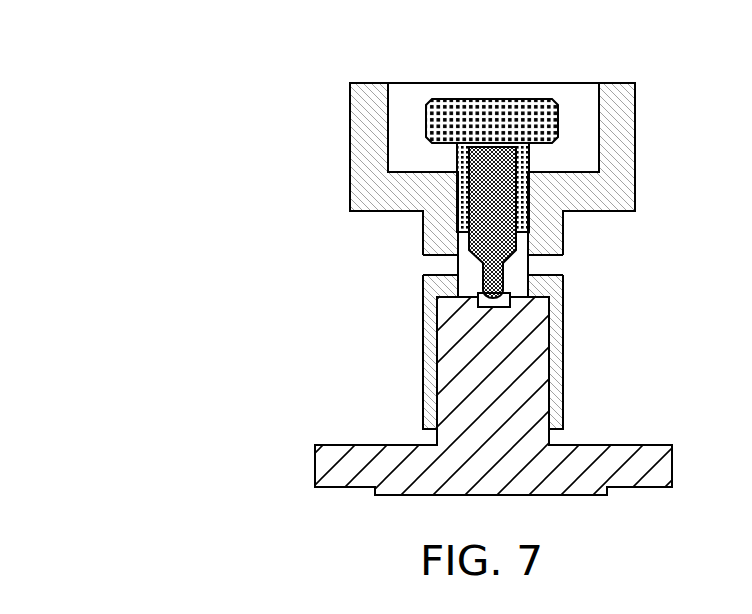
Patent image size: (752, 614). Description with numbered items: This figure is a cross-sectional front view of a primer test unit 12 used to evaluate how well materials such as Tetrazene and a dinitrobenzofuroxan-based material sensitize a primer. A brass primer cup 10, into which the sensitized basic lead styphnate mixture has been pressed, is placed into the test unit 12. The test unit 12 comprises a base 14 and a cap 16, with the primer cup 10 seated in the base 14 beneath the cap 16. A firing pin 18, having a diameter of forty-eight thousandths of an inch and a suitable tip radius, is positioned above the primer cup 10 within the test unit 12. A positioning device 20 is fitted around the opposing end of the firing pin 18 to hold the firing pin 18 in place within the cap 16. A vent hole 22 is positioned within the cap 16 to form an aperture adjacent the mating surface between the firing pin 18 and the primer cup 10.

The primer cup 10 is at (503, 285).
The test unit 12 is at (153, 74).
The base 14 is at (443, 473).
The cap 16 is at (367, 152).
The firing pin 18 is at (500, 283).
The positioning device 20 is at (465, 123).
The vent hole 22 is at (553, 264).